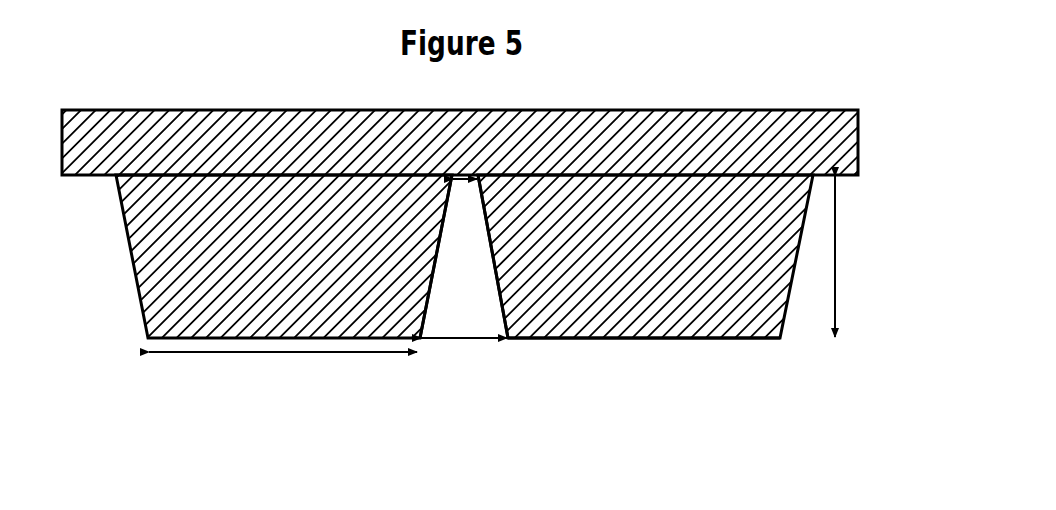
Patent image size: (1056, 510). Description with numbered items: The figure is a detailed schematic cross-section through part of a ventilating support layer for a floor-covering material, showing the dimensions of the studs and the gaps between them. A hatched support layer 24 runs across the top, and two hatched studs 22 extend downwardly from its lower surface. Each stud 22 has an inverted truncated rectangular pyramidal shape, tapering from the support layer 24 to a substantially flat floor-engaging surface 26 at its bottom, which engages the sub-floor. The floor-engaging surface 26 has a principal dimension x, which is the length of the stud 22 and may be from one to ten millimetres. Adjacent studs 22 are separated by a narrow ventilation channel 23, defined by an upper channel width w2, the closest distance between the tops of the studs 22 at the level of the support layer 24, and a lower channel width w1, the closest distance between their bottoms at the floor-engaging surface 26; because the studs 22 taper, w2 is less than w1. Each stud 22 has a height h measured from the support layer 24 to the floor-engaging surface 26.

The stud 22 is at (733, 327).
The narrow ventilation channel 23 is at (457, 310).
The support layer 24 is at (717, 117).
The floor-engaging surface 26 is at (607, 338).
The lower channel width w1 is at (433, 340).
The upper channel width w2 is at (466, 178).
The principal dimension x is at (228, 352).
The height h is at (838, 258).